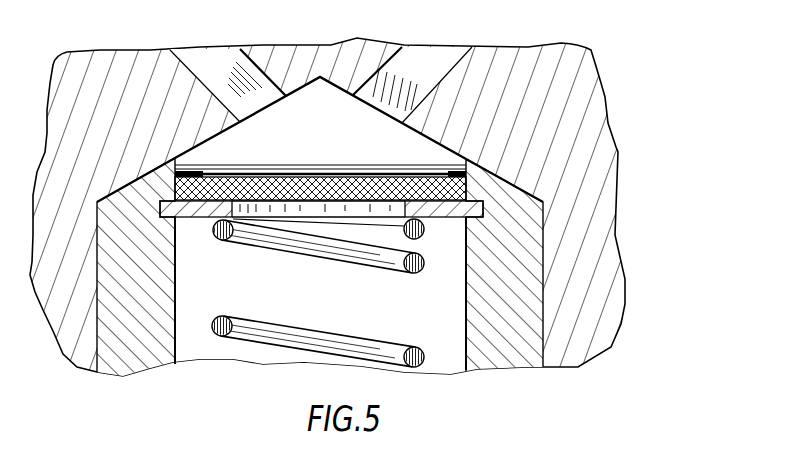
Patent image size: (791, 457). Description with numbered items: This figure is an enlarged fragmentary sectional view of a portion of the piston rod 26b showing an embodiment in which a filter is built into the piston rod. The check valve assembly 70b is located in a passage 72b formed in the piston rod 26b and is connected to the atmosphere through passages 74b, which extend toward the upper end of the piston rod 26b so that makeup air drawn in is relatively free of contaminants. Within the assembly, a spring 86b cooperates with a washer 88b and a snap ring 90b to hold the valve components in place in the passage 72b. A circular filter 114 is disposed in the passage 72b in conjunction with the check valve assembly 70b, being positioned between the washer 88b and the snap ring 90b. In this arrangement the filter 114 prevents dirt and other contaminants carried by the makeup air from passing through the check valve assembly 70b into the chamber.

The piston rod 26b is at (588, 88).
The check valve assembly 70b is at (562, 298).
The passage 72b is at (400, 140).
The passages 74b is at (405, 70).
The spring 86b is at (424, 266).
The washer 88b is at (481, 218).
The snap ring 90b is at (468, 166).
The circular filter 114 is at (466, 190).